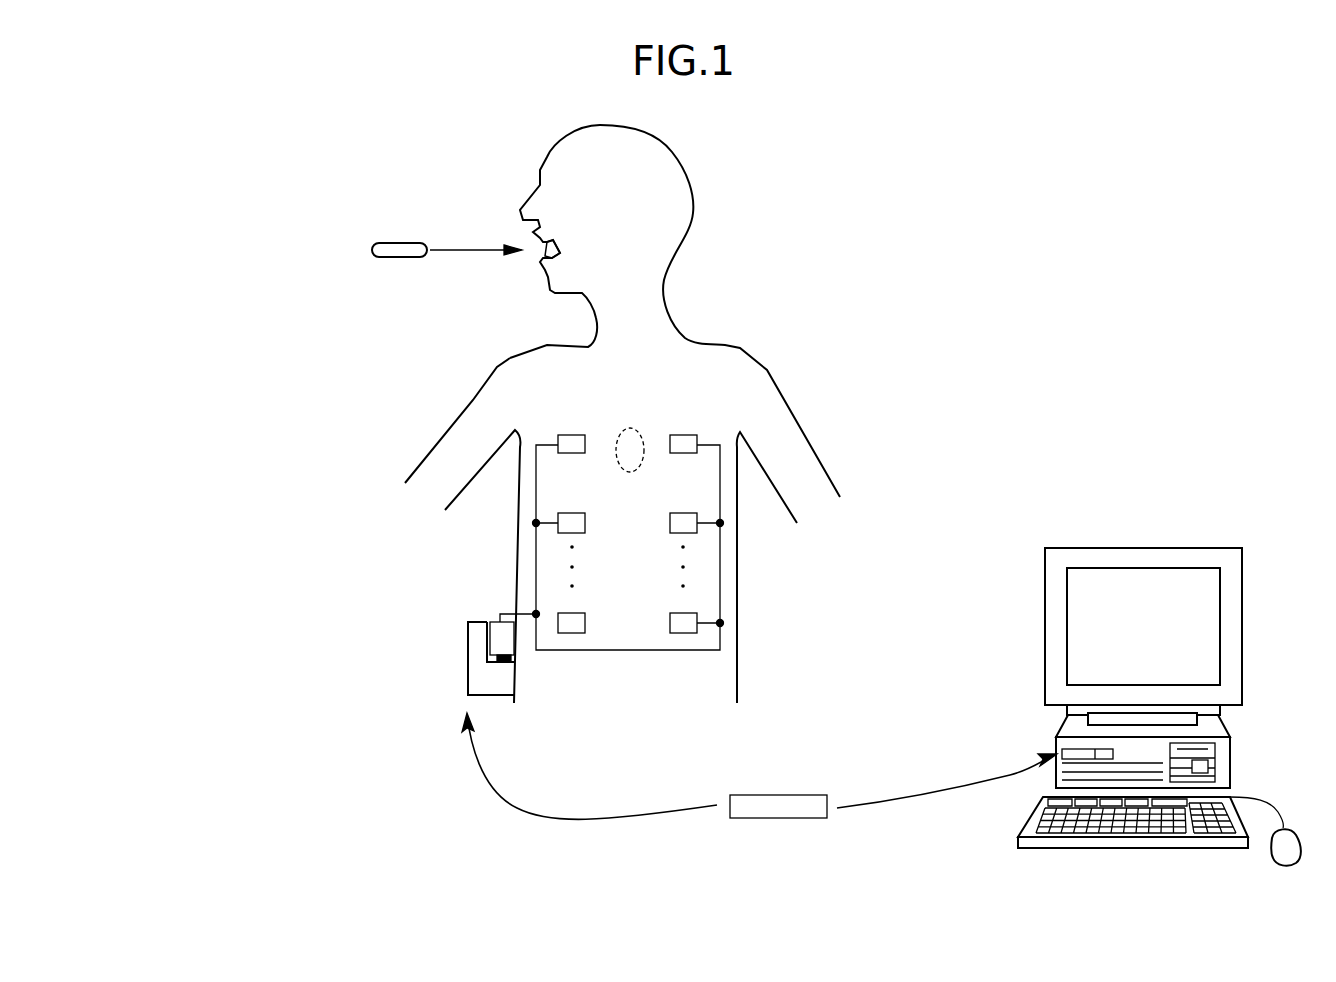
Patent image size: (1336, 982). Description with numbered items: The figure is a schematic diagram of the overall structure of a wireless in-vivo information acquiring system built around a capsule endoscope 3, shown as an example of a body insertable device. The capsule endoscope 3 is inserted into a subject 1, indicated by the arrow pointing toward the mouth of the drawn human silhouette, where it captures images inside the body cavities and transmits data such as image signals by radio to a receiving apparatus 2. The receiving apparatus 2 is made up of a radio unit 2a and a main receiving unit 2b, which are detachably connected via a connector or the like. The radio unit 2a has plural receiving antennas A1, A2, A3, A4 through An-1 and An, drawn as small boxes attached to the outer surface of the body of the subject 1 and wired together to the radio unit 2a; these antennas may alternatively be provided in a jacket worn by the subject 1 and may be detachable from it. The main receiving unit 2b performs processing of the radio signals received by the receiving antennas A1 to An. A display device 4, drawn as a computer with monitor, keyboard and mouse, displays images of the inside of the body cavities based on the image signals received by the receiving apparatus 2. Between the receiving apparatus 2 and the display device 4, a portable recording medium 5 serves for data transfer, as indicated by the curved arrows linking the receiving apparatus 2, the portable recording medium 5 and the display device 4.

The subject 1 is at (663, 142).
The receiving apparatus 2 is at (283, 631).
The radio unit 2a is at (495, 623).
The main receiving unit 2b is at (468, 630).
The capsule endoscope 3 is at (400, 258).
The display device 4 is at (1124, 547).
The portable recording medium 5 is at (790, 818).
The receiving antenna A1 is at (570, 435).
The receiving antenna A2 is at (683, 435).
The receiving antenna A3 is at (570, 513).
The receiving antenna A4 is at (683, 513).
The receiving antenna An-1 is at (575, 613).
The receiving antenna An is at (683, 613).